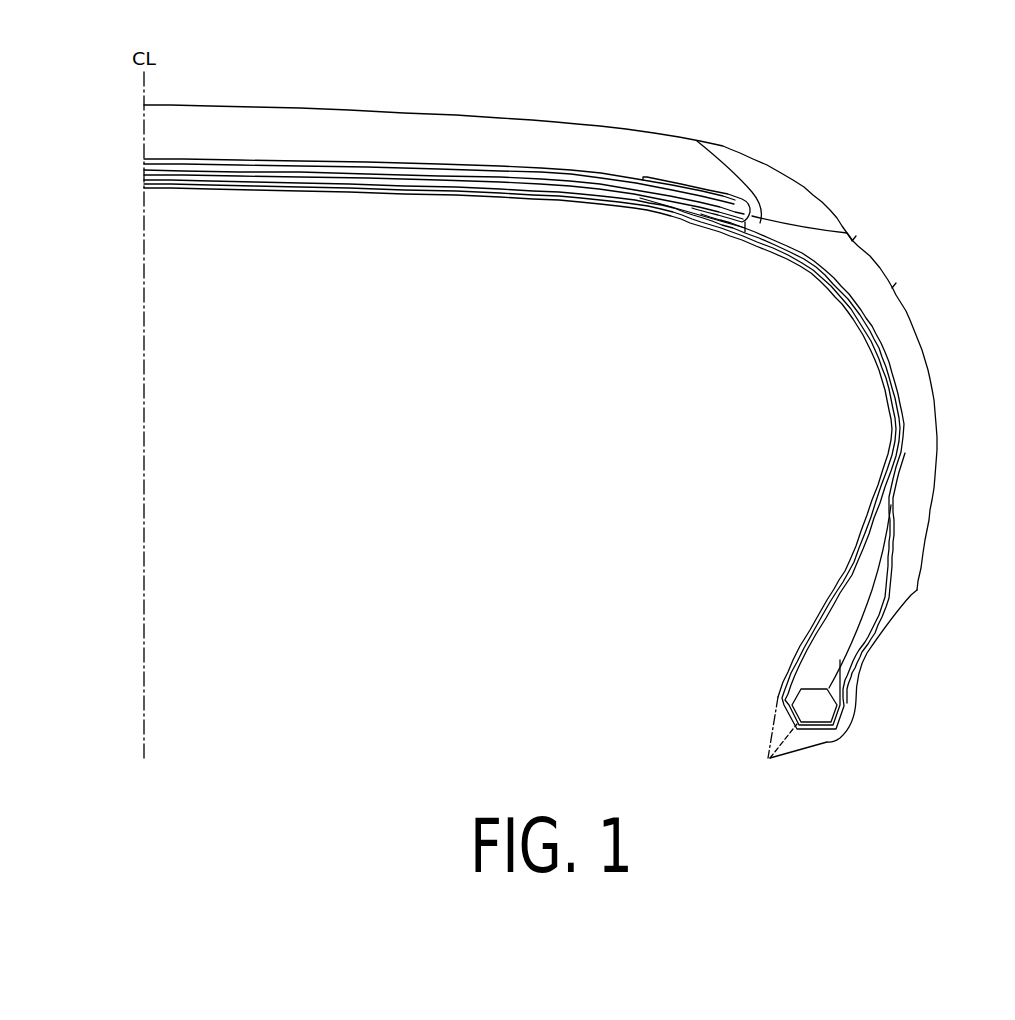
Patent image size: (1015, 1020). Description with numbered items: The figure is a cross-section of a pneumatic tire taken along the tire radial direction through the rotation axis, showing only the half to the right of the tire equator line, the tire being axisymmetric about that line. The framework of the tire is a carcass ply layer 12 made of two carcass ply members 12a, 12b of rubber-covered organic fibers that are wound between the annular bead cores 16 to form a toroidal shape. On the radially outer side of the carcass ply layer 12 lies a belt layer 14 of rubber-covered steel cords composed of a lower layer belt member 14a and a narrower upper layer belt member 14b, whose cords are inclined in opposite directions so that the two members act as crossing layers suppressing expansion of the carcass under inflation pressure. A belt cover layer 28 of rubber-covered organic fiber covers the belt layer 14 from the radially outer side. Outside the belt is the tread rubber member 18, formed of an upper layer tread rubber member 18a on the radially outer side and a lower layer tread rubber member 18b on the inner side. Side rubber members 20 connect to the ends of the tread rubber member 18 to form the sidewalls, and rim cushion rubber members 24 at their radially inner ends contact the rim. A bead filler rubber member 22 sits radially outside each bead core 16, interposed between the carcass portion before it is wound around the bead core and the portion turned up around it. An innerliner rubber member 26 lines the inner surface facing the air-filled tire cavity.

The carcass ply layer 12 is at (524, 469).
The carcass ply member 12a is at (757, 241).
The carcass ply member 12b is at (742, 229).
The belt layer 14 is at (444, 132).
The lower layer belt member 14a is at (555, 183).
The upper layer belt member 14b is at (533, 168).
The bead core 16 is at (810, 705).
The tread rubber member 18 is at (525, 172).
The upper layer tread rubber member 18a is at (770, 193).
The lower layer tread rubber member 18b is at (752, 216).
The side rubber member 20 is at (905, 525).
The bead filler rubber member 22 is at (835, 637).
The rim cushion rubber member 24 is at (907, 578).
The innerliner rubber member 26 is at (610, 211).
The belt cover layer 28 is at (655, 179).